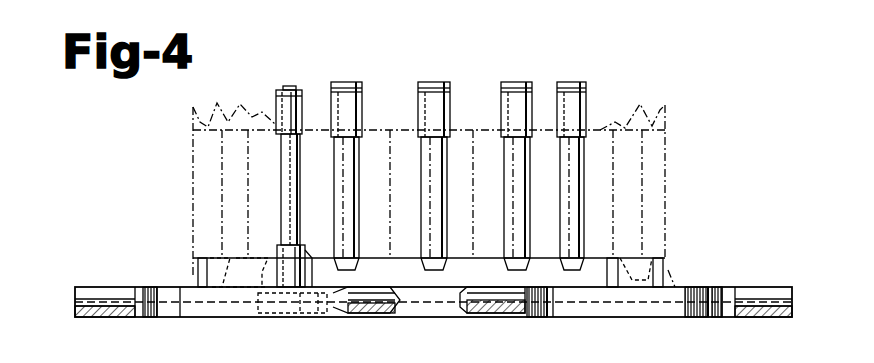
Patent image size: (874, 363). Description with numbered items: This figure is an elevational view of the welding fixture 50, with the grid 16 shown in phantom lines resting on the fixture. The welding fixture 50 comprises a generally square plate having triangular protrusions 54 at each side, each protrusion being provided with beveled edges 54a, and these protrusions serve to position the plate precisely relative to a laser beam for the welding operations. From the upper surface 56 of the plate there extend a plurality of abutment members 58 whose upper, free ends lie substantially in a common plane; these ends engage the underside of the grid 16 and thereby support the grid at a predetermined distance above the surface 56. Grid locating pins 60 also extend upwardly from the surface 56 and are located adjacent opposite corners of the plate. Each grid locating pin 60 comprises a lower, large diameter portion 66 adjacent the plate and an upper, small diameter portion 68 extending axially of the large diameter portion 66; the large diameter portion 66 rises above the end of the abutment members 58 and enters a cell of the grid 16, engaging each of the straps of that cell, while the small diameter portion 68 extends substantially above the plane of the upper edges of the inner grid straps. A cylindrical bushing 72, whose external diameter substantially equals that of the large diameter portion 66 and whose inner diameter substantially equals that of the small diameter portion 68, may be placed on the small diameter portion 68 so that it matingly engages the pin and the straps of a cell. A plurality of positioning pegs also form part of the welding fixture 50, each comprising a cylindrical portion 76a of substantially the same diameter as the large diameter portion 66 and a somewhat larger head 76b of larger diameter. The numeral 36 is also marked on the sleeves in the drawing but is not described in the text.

The grid 16 is at (434, 195).
The contact pins 36 is at (477, 149).
The welding fixture 50 is at (416, 274).
The triangular protrusions 54 is at (145, 286).
The beveled edges 54a is at (97, 295).
The upper surface 56 is at (184, 287).
The abutment members 58 is at (207, 268).
The grid locating pins 60 is at (310, 268).
The large diameter portion 66 is at (283, 270).
The small diameter portion 68 is at (284, 88).
The cylindrical bushing 72 is at (286, 178).
The cylindrical portion 76a is at (502, 147).
The head 76b is at (336, 82).